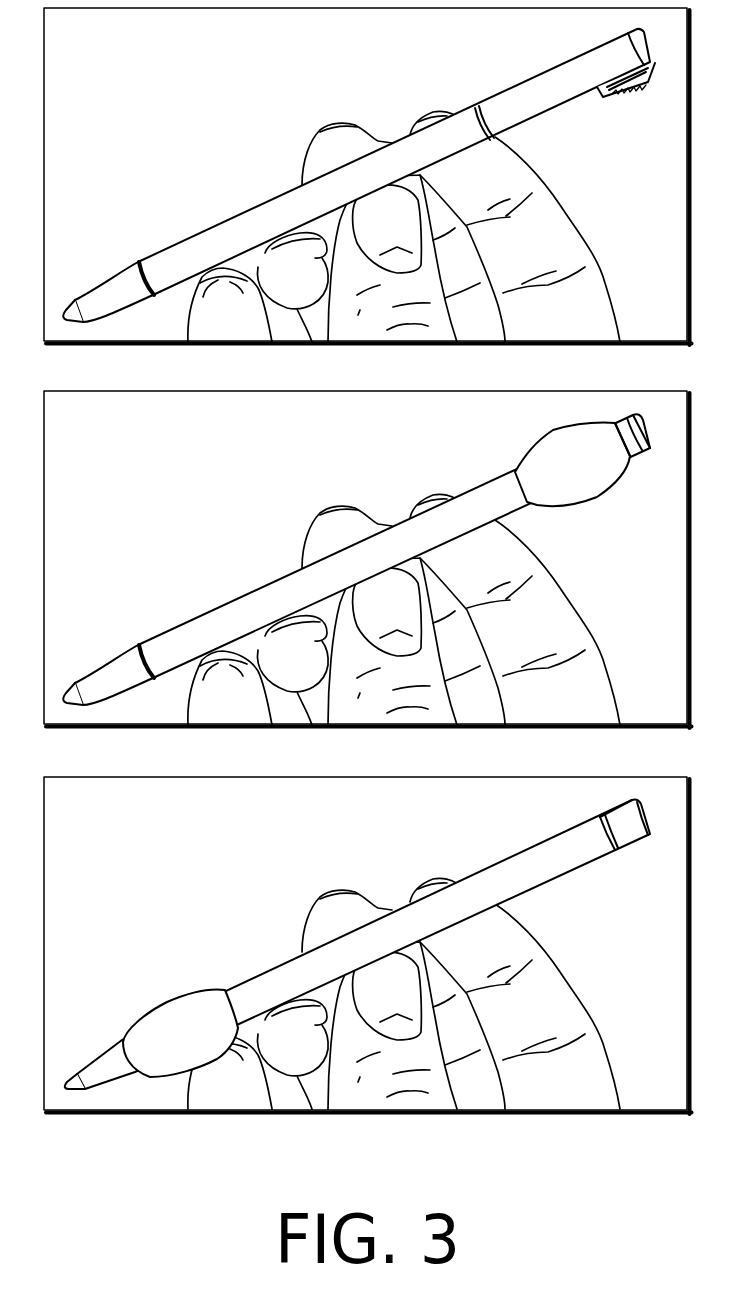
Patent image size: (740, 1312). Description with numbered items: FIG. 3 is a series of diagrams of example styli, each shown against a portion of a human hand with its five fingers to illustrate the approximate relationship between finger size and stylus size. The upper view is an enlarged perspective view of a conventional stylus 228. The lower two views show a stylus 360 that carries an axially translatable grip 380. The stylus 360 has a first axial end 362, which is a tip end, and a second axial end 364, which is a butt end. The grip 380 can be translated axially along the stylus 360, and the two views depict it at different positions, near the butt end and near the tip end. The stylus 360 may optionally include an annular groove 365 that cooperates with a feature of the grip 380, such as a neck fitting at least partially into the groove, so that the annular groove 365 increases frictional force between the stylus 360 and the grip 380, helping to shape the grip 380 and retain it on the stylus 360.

The stylus 228 is at (207, 238).
The stylus 360 is at (356, 751).
The first axial end 362 is at (63, 698).
The second axial end 364 is at (645, 448).
The annular groove 365 is at (600, 817).
The axially translatable grip 380 is at (537, 463).